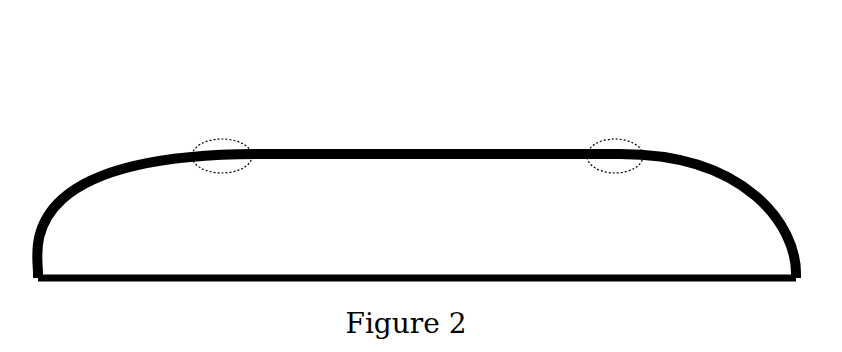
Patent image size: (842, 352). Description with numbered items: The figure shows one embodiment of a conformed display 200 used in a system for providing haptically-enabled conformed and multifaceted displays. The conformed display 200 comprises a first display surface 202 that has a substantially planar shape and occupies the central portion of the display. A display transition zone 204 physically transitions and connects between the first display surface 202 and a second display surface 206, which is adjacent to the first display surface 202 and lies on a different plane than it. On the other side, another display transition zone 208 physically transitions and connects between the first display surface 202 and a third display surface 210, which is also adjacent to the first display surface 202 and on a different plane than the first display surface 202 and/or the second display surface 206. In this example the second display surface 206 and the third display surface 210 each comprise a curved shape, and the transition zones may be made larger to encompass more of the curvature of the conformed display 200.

The conformed display 200 is at (417, 260).
The first display surface 202 is at (411, 148).
The display transition zone 204 is at (222, 138).
The second display surface 206 is at (99, 177).
The display transition zone 208 is at (605, 136).
The third display surface 210 is at (727, 173).